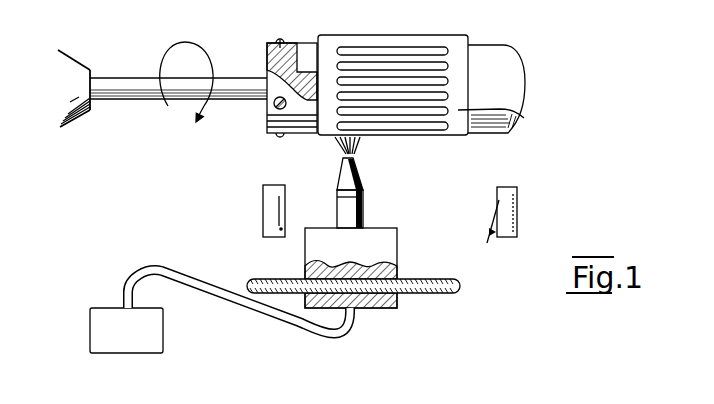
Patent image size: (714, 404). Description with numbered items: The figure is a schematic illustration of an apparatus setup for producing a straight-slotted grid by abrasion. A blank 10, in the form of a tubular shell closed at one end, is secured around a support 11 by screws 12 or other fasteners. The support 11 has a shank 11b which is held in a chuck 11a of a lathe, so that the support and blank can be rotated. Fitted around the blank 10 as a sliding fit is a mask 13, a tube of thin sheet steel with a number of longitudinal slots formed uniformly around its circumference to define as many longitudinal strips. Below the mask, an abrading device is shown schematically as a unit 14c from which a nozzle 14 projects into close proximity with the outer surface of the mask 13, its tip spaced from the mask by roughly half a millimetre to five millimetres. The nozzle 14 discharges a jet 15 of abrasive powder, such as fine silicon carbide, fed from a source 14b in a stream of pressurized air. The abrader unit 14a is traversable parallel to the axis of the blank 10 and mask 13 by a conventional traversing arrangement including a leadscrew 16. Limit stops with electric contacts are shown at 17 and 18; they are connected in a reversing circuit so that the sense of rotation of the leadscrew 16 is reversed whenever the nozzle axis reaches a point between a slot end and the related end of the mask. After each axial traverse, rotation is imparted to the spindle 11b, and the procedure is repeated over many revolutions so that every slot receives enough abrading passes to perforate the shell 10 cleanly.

The blank 10 is at (523, 84).
The support 11 is at (267, 49).
The chuck 11a is at (72, 66).
The shank 11b is at (130, 80).
The screws 12 is at (281, 40).
The mask 13 is at (524, 118).
The nozzle 14 is at (340, 176).
The abrader unit 14a is at (195, 276).
The source 14b is at (100, 317).
The unit 14c is at (378, 231).
The spray 15 is at (357, 142).
The leadscrew 16 is at (274, 279).
The limit stop 17 is at (265, 204).
The limit stop 18 is at (518, 210).